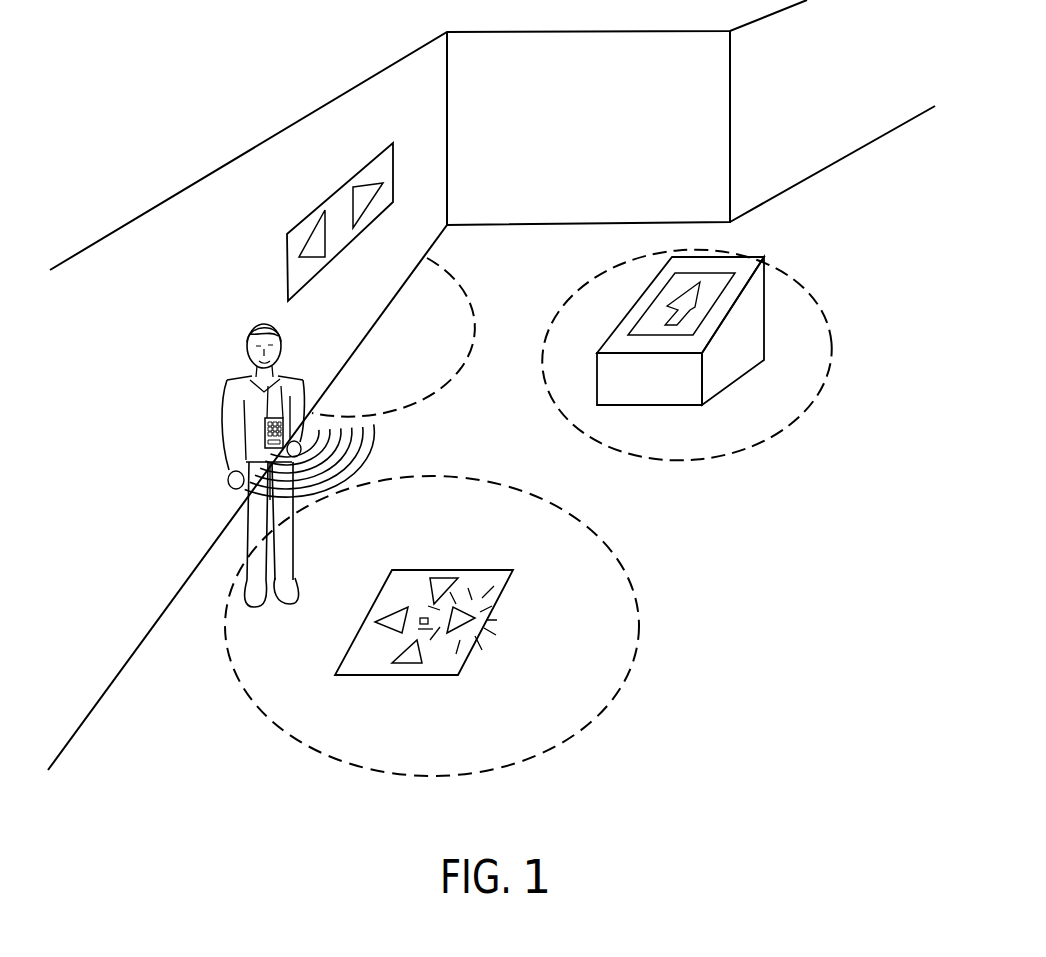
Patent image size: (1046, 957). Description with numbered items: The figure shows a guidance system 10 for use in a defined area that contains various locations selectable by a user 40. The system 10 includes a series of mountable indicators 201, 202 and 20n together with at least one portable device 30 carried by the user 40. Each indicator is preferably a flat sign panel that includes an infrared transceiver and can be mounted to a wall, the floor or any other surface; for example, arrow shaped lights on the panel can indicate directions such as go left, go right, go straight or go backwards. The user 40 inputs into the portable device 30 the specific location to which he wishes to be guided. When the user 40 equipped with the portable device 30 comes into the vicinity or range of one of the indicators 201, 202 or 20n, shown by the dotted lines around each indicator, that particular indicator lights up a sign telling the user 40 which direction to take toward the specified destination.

The system 10 is at (246, 54).
The mountable indicator 201 is at (493, 581).
The mountable indicator 202 is at (336, 212).
The mountable indicator 20n is at (748, 265).
The portable device 30 is at (300, 420).
The user 40 is at (203, 378).